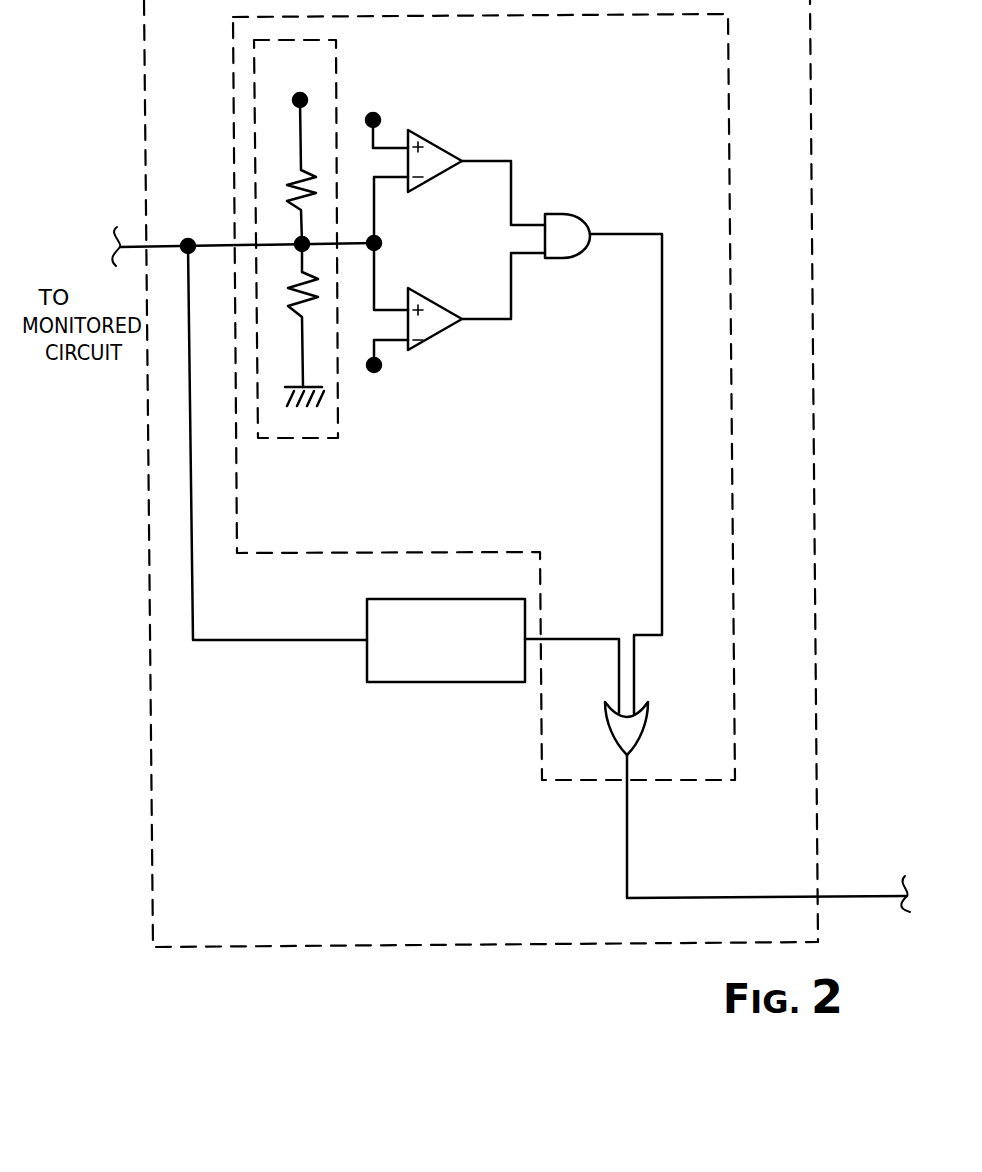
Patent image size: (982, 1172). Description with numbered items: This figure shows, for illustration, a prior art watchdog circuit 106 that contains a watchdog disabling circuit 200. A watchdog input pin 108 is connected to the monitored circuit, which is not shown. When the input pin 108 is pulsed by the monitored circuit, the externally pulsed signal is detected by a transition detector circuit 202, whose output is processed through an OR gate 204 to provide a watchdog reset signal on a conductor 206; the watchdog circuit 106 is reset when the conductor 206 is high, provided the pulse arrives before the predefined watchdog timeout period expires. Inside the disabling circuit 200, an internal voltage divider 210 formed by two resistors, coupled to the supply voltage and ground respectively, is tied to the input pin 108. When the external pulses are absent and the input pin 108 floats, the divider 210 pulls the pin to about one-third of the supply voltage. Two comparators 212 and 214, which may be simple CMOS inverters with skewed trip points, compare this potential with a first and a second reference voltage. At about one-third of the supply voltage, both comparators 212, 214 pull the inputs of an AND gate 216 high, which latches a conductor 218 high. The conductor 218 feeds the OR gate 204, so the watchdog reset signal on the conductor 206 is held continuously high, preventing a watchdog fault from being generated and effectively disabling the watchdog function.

The watchdog circuit 106 is at (325, 948).
The watchdog input pin 108 is at (207, 243).
The watchdog disabling circuit 200 is at (767, 26).
The internal voltage divider 210 is at (332, 42).
The comparator 212 is at (441, 146).
The comparator 214 is at (443, 303).
The AND gate 216 is at (574, 216).
The conductor 218 is at (700, 298).
The transition detector circuit 202 is at (400, 683).
The OR gate 204 is at (648, 716).
The conductor 206 is at (758, 896).